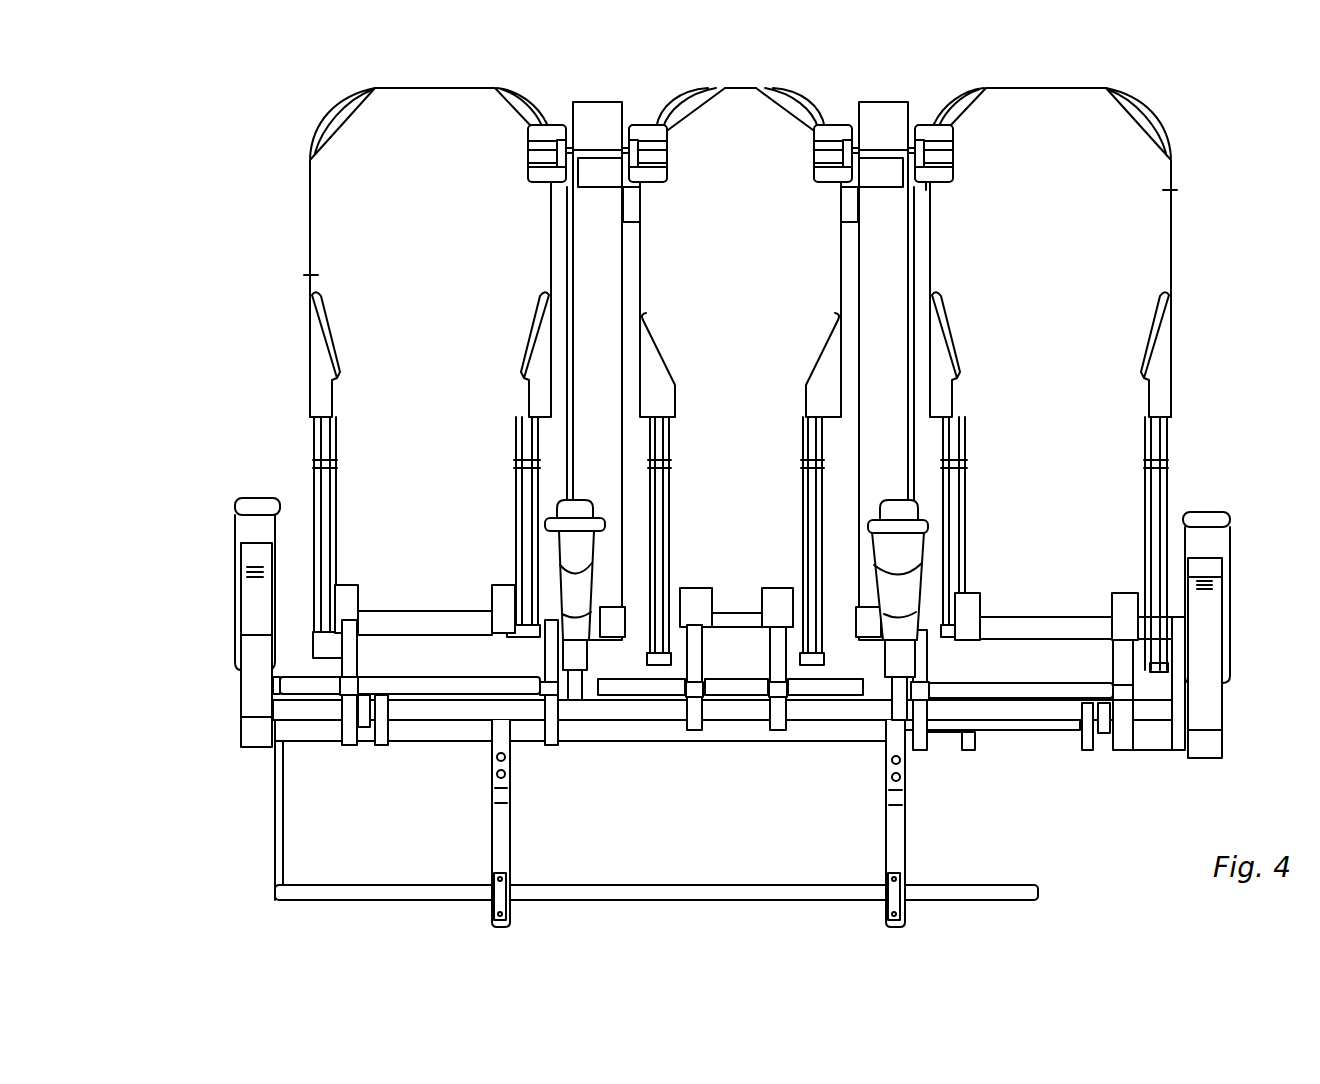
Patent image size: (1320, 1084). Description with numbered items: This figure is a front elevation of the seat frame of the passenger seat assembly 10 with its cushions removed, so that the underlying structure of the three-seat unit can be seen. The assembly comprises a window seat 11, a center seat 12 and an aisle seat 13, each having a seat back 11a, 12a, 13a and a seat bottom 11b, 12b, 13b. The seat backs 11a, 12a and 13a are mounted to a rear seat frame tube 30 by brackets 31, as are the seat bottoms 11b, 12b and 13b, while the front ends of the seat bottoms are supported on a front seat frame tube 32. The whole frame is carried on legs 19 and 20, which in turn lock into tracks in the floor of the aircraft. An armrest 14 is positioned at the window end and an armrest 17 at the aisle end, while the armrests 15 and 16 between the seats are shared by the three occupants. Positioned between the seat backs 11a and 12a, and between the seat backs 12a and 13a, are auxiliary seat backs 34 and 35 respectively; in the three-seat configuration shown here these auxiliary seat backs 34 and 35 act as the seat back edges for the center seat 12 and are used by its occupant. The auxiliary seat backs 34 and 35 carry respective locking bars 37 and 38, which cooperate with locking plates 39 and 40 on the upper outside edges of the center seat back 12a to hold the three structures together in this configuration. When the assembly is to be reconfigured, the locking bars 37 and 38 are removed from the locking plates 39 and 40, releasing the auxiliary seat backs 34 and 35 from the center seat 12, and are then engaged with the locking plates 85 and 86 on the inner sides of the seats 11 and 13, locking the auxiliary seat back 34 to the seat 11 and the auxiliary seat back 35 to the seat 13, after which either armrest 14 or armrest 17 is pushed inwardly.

The seat assembly 10 is at (264, 202).
The window seat 11 is at (445, 275).
The seat back 11a is at (320, 274).
The seat bottom 11b is at (290, 683).
The center seat 12 is at (752, 275).
The seat back 12a is at (740, 100).
The seat bottom 12b is at (728, 690).
The aisle seat 13 is at (1055, 282).
The seat back 13a is at (1163, 192).
The seat bottom 13b is at (1058, 693).
The armrest 14 is at (245, 528).
The armrest 15 is at (571, 511).
The armrest 16 is at (873, 532).
The armrest 17 is at (1218, 543).
The leg 19 is at (492, 850).
The leg 20 is at (907, 850).
The rear seat frame tube 30 is at (975, 722).
The brackets 31 is at (550, 664).
The front seat frame tube 32 is at (933, 712).
The auxiliary seat back 34 is at (583, 102).
The auxiliary seat back 35 is at (889, 102).
The locking bar 37 is at (612, 152).
The locking bar 38 is at (930, 125).
The locking plate 39 is at (645, 125).
The locking plate 40 is at (836, 130).
The locking plate 85 is at (543, 132).
The locking plate 86 is at (943, 137).